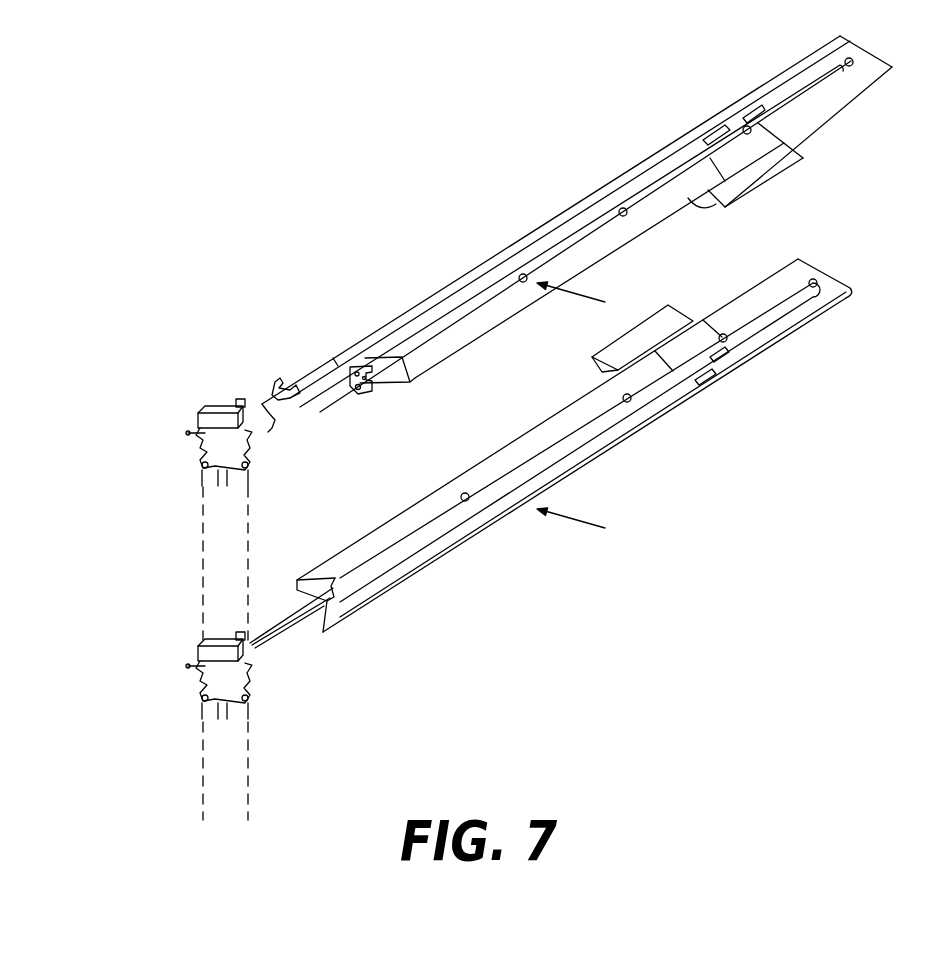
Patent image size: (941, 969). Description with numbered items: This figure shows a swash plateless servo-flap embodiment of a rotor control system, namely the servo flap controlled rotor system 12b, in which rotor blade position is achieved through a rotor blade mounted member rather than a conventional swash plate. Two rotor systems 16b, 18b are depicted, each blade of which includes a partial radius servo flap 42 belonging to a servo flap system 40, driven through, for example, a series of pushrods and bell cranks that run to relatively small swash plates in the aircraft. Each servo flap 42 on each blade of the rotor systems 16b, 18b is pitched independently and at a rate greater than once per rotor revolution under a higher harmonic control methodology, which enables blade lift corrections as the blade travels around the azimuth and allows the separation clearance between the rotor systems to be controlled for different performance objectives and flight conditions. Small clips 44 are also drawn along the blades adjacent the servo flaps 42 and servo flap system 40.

The servo flap controlled rotor system 12b is at (314, 173).
The rotor system 16b is at (258, 360).
The rotor system 18b is at (311, 553).
The servo flap system 40 is at (199, 405).
The partial radius servo flap 42 is at (805, 158).
The clip 44 is at (710, 135).